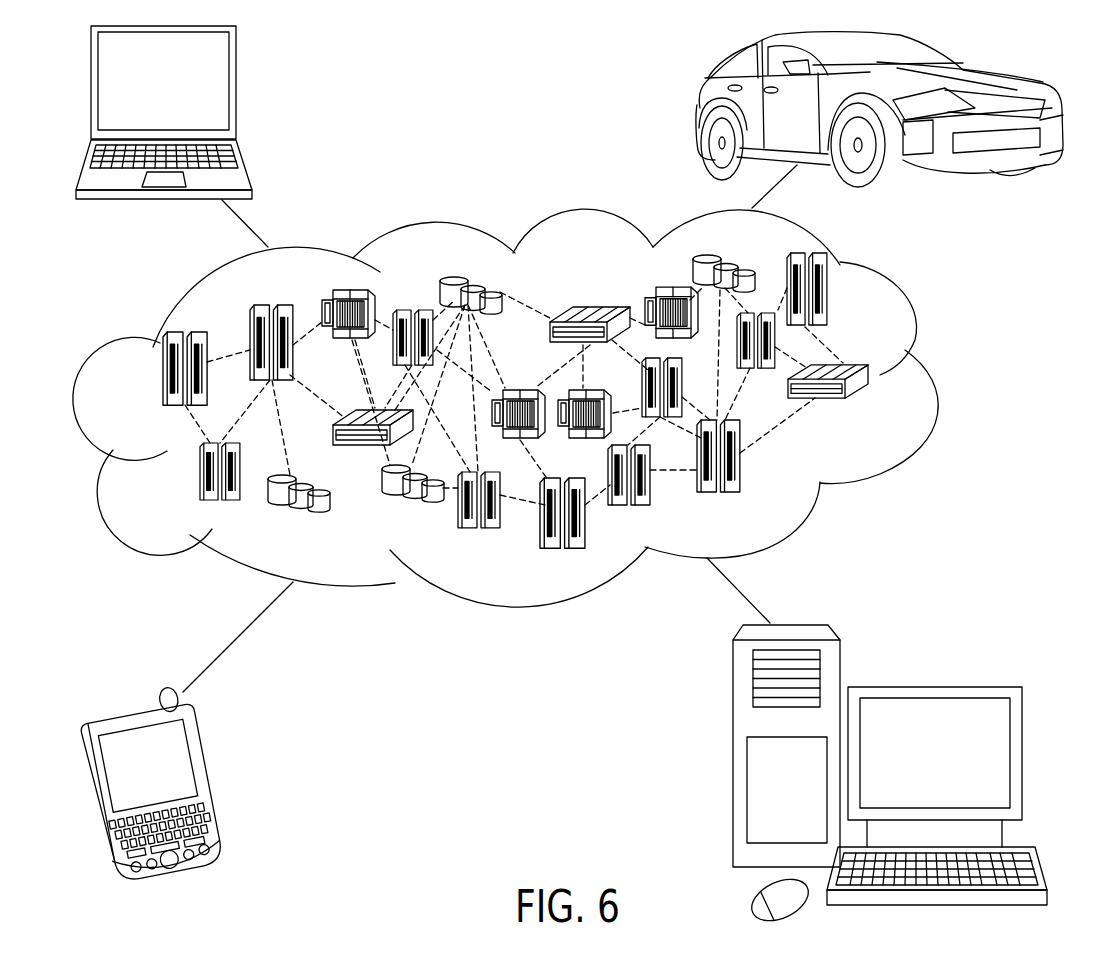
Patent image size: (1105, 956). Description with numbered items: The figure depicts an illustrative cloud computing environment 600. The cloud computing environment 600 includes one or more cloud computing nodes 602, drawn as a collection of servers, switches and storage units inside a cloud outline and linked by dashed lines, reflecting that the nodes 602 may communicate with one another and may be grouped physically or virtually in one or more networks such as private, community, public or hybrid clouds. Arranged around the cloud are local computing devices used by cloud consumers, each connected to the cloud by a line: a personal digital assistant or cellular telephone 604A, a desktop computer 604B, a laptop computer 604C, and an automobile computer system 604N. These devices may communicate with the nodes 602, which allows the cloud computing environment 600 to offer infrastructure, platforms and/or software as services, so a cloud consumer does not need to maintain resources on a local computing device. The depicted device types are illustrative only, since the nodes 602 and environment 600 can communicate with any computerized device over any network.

The cloud computing environment 600 is at (935, 385).
The cloud computing nodes 602 is at (880, 413).
The personal digital assistant (PDA) or cellular telephone 604A is at (225, 786).
The desktop computer 604B is at (932, 683).
The laptop computer 604C is at (239, 91).
The automobile computer system 604N is at (700, 108).